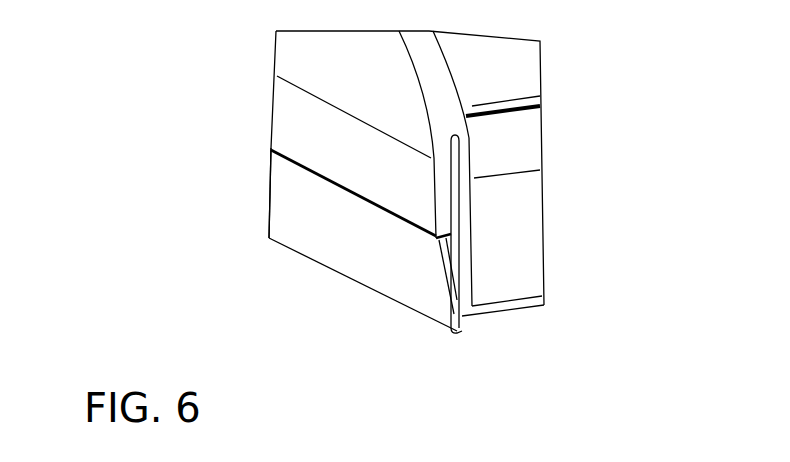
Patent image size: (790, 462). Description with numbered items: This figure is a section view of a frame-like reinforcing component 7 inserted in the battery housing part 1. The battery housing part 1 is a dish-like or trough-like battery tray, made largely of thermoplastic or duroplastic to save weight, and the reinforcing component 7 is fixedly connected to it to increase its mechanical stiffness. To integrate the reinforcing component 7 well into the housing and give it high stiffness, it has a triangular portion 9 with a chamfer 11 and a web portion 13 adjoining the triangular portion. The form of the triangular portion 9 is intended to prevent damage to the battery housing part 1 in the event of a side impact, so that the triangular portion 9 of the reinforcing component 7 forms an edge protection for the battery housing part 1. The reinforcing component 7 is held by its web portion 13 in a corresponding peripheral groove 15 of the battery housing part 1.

The battery housing part 1 is at (511, 88).
The frame-like reinforcing component 7 is at (361, 291).
The triangular portion 9 is at (266, 200).
The chamfer 11 is at (316, 220).
The web portion 13 is at (458, 218).
The peripheral groove 15 is at (464, 165).